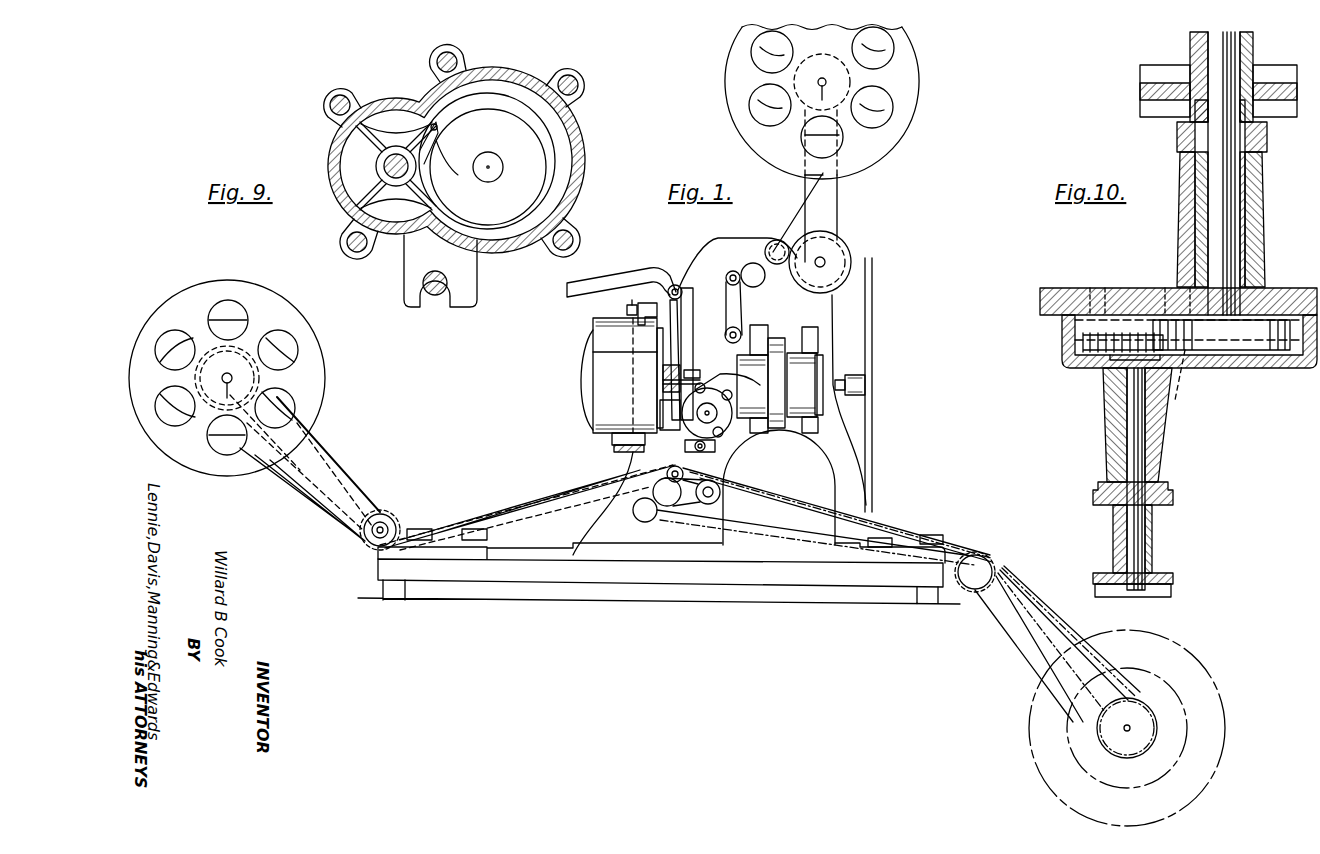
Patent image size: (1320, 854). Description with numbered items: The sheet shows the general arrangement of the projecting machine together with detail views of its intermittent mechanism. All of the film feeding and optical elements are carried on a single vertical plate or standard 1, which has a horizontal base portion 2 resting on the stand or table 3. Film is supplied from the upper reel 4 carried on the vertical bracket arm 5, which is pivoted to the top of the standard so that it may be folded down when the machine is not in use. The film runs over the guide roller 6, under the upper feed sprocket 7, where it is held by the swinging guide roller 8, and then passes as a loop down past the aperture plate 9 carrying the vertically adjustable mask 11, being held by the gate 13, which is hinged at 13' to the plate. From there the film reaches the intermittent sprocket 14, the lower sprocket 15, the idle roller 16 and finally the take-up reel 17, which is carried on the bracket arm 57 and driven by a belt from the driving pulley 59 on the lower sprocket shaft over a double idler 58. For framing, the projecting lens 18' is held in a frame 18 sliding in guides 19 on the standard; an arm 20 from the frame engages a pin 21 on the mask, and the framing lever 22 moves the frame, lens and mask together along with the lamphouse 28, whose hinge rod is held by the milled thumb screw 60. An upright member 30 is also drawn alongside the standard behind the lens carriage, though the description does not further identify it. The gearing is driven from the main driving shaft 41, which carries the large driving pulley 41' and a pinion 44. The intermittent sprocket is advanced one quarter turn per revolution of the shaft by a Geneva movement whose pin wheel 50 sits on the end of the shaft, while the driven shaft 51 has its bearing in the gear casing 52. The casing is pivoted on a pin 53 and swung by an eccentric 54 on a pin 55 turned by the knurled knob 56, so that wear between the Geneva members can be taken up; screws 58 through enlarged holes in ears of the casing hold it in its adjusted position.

In FIG. 1, the vertical plate or standard 1 is at (742, 238).
In FIG. 10, the vertical plate or standard 1 is at (1075, 290).
In FIG. 1, the horizontal base portion 2 is at (767, 553).
In FIG. 1, the stand or table 3 is at (553, 572).
In FIG. 1, the upper reel 4 is at (918, 90).
In FIG. 1, the vertical bracket arm 5 is at (838, 213).
In FIG. 1, the guide roller 6 is at (776, 240).
In FIG. 1, the upper feed sprocket 7 is at (756, 286).
In FIG. 1, the swinging guide roller 8 is at (728, 275).
In FIG. 1, the aperture plate 9 is at (694, 302).
In FIG. 1, the supplemental plate or mask 11 is at (694, 330).
In FIG. 1, the gate 13 is at (655, 313).
In FIG. 1, the hinge 13' is at (707, 354).
In FIG. 1, the intermittent sprocket 14 is at (718, 414).
In FIG. 10, the intermittent sprocket 14 is at (1172, 500).
In FIG. 1, the lower sprocket 15 is at (652, 492).
In FIG. 1, the idle roller 16 is at (632, 512).
In FIG. 1, the take-up reel 17 is at (316, 372).
In FIG. 1, the frame 18 is at (763, 368).
In FIG. 1, the projecting lens 18' is at (820, 273).
In FIG. 1, the guides 19 is at (819, 336).
In FIG. 1, the arm 20 is at (735, 370).
In FIG. 1, the pin 21 is at (696, 366).
In FIG. 1, the framing lever 22 is at (592, 285).
In FIG. 1, the lamphouse 28 is at (595, 340).
In FIG. 1, the upright rod 30 is at (873, 306).
In FIG. 9, the main driving shaft 41 is at (489, 152).
In FIG. 10, the main driving shaft 41 is at (1233, 173).
In FIG. 10, the large driving pulley 41' is at (1211, 77).
In FIG. 10, the pinion 44 is at (1176, 142).
In FIG. 9, the pin wheel 50 is at (528, 152).
In FIG. 10, the pin wheel 50 is at (1232, 343).
In FIG. 9, the driven shaft 51 is at (396, 154).
In FIG. 10, the driven shaft 51 is at (1130, 420).
In FIG. 9, the gear casing 52 is at (343, 200).
In FIG. 1, the gear casing 52 is at (736, 440).
In FIG. 10, the gear casing 52 is at (1190, 368).
In FIG. 9, the pin 53 is at (462, 58).
In FIG. 1, the pin 53 is at (740, 374).
In FIG. 9, the eccentric 54 is at (454, 299).
In FIG. 10, the eccentric 54 is at (1185, 318).
In FIG. 9, the pin 55 is at (432, 296).
In FIG. 10, the pin 55 is at (1160, 300).
In FIG. 1, the knurled knob 56 is at (694, 448).
In FIG. 10, the knurled knob 56 is at (1183, 384).
In FIG. 1, the bracket arm 57 is at (340, 478).
In FIG. 9, the screws / double idler 58 is at (334, 96).
In FIG. 1, the screws / double idler 58 is at (396, 518).
In FIG. 1, the driving pulley 59 is at (626, 465).
In FIG. 1, the milled thumb screw 60 is at (622, 306).